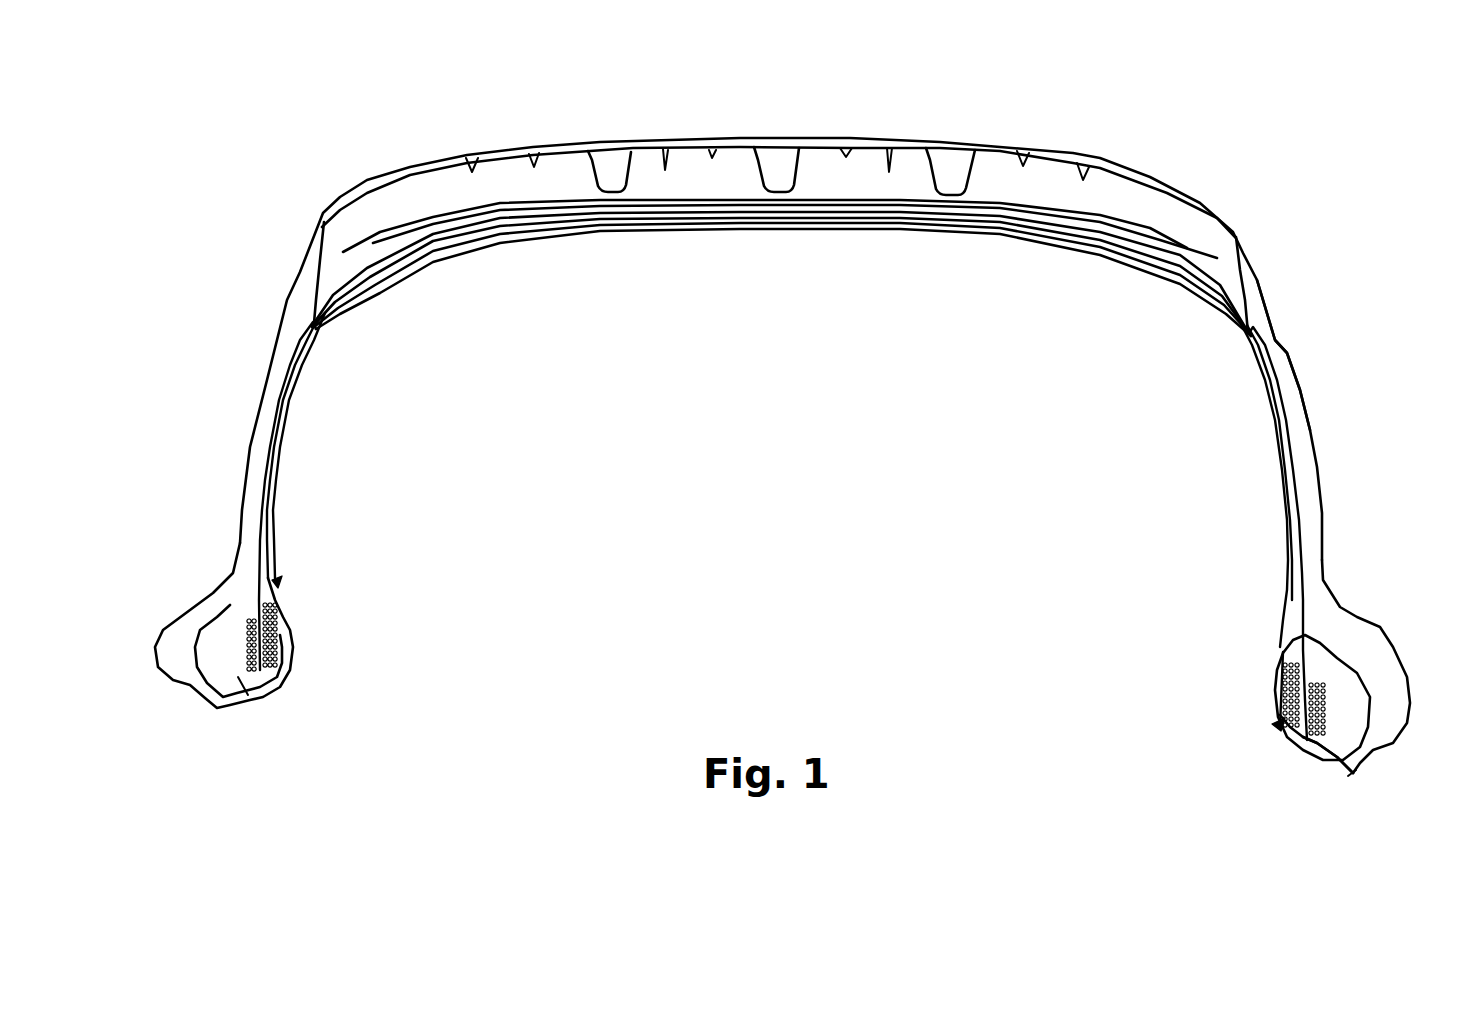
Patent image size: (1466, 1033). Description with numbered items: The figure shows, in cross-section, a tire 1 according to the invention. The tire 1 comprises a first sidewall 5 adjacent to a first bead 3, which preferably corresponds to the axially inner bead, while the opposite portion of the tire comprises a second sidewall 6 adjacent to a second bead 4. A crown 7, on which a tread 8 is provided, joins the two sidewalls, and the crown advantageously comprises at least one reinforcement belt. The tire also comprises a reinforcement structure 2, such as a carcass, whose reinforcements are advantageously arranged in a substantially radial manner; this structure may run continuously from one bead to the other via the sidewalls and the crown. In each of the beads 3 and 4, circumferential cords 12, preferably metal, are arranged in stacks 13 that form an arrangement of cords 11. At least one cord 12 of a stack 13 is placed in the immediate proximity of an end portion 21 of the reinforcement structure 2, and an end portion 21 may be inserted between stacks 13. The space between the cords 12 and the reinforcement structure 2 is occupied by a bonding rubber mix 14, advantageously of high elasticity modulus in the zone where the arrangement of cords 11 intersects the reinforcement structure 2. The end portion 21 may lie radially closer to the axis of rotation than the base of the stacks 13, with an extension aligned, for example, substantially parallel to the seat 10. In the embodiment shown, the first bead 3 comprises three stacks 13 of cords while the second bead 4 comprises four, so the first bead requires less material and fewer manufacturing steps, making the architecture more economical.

The tire 1 is at (1199, 144).
The reinforcement structure 2 is at (1305, 492).
The first bead 3 is at (250, 698).
The second bead 4 is at (1387, 720).
The first sidewall 5 is at (295, 403).
The second sidewall 6 is at (1295, 370).
The crown 7 is at (848, 212).
The tread 8 is at (685, 162).
The seat 10 is at (1303, 785).
The arrangement of cords 11 is at (280, 580).
The circumferential cords 12 is at (280, 622).
The stacks 13 is at (265, 636).
The bonding rubber mix 14 is at (265, 636).
The end portion 21 is at (1300, 717).